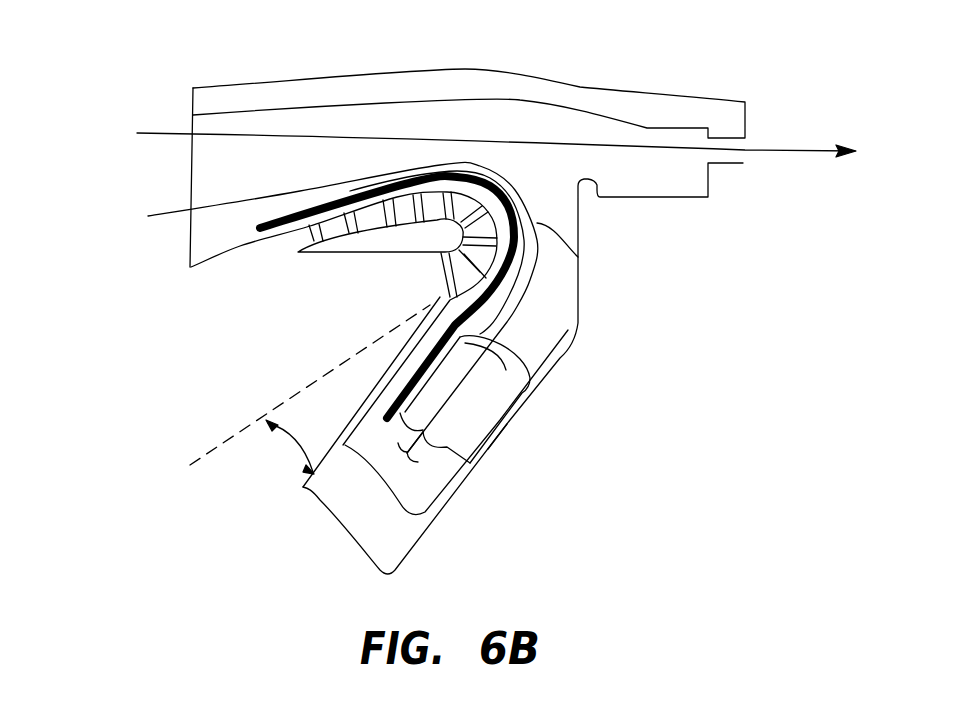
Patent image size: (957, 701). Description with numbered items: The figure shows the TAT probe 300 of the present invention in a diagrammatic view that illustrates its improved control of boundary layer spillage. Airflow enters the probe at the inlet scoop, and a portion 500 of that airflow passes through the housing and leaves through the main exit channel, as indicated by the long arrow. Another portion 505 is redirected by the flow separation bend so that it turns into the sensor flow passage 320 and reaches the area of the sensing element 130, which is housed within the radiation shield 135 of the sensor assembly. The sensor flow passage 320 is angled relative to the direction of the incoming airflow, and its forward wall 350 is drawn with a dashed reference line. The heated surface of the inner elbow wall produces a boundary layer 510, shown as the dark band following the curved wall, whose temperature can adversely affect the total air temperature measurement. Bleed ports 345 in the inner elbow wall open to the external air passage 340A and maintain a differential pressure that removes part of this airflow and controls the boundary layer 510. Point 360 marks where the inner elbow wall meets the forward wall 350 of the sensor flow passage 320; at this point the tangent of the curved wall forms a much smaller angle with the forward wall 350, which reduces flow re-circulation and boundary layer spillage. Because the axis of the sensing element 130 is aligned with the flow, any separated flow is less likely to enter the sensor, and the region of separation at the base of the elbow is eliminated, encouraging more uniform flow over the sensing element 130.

The TAT probe 300 is at (151, 104).
The portion of the airflow 500 is at (780, 148).
The portion of the airflow 505 is at (580, 258).
The external air passage 340A is at (407, 242).
The bleed ports 345 is at (432, 231).
The boundary layer 510 is at (270, 223).
The point 360 is at (440, 297).
The sensor flow passage 320 is at (403, 553).
The sensing element 130 is at (453, 448).
The radiation shield 135 is at (507, 424).
The forward wall 350 is at (300, 483).